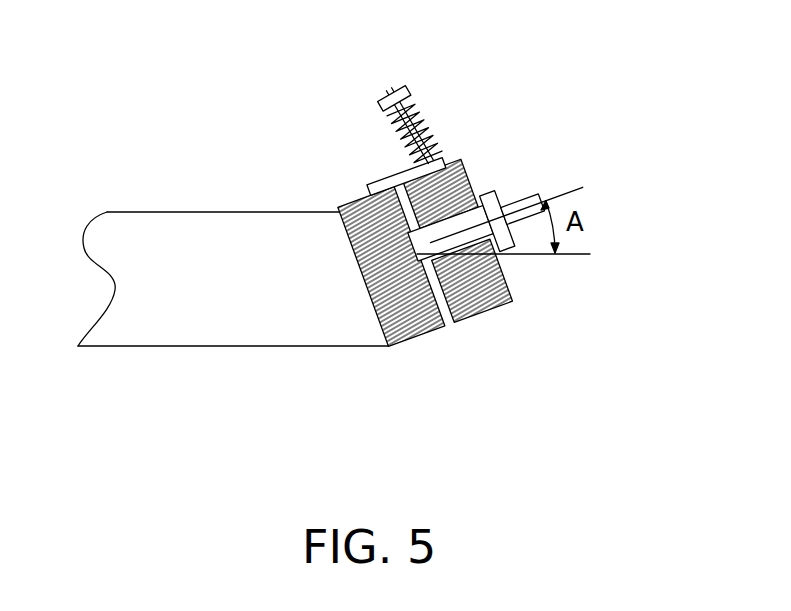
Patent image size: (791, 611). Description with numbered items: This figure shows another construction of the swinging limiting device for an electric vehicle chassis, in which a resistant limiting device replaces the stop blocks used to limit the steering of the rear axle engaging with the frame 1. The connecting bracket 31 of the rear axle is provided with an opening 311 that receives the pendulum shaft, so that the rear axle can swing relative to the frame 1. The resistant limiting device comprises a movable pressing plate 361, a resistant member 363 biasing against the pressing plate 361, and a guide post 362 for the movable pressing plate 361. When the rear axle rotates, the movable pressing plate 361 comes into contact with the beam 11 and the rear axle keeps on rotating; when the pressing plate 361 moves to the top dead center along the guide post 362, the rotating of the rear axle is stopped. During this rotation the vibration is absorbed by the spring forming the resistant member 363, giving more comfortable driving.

The frame 1 is at (178, 318).
The beam 11 is at (422, 303).
The connecting bracket 31 is at (493, 312).
The opening 311 is at (533, 196).
The movable pressing plate 361 is at (382, 180).
The guide post 362 is at (406, 96).
The resistant member 363 is at (428, 136).